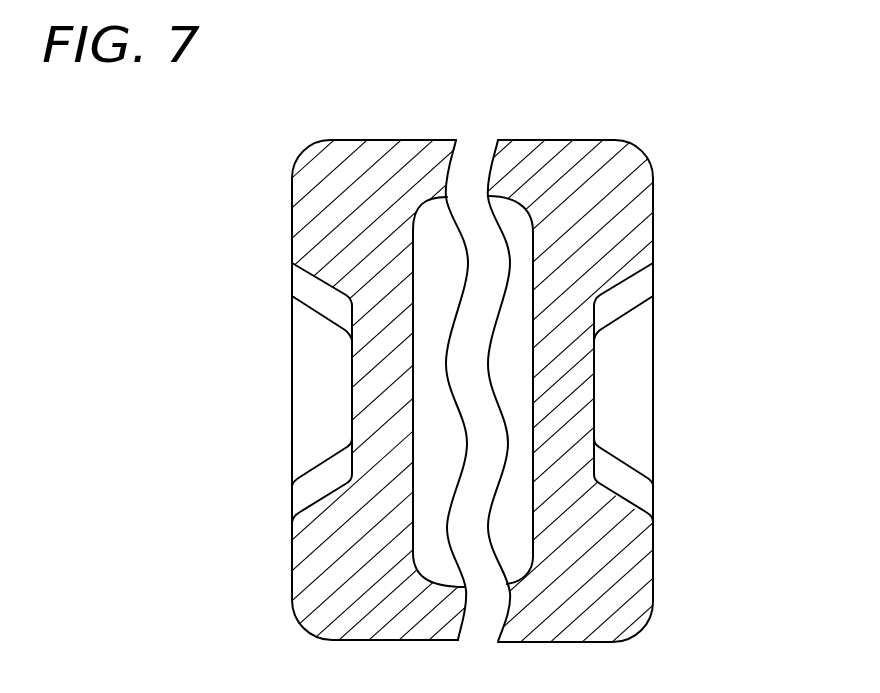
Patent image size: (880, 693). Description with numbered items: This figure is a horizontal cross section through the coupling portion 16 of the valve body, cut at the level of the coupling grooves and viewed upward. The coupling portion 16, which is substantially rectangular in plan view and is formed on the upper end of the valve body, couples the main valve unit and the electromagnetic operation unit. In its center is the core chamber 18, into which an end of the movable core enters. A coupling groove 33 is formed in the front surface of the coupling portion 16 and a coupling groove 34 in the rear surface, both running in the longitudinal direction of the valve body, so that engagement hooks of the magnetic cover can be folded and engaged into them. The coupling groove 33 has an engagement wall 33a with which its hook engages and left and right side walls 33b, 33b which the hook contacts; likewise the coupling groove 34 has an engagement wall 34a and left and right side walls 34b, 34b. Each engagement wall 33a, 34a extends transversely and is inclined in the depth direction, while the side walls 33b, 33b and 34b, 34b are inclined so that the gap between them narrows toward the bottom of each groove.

The coupling portion 16 is at (578, 187).
The core chamber 18 is at (432, 233).
The coupling groove 33 is at (643, 415).
The engagement wall 33a is at (630, 362).
The side wall 33b is at (618, 290).
The coupling groove 34 is at (306, 411).
The engagement wall 34a is at (320, 358).
The side wall 34b is at (305, 297).